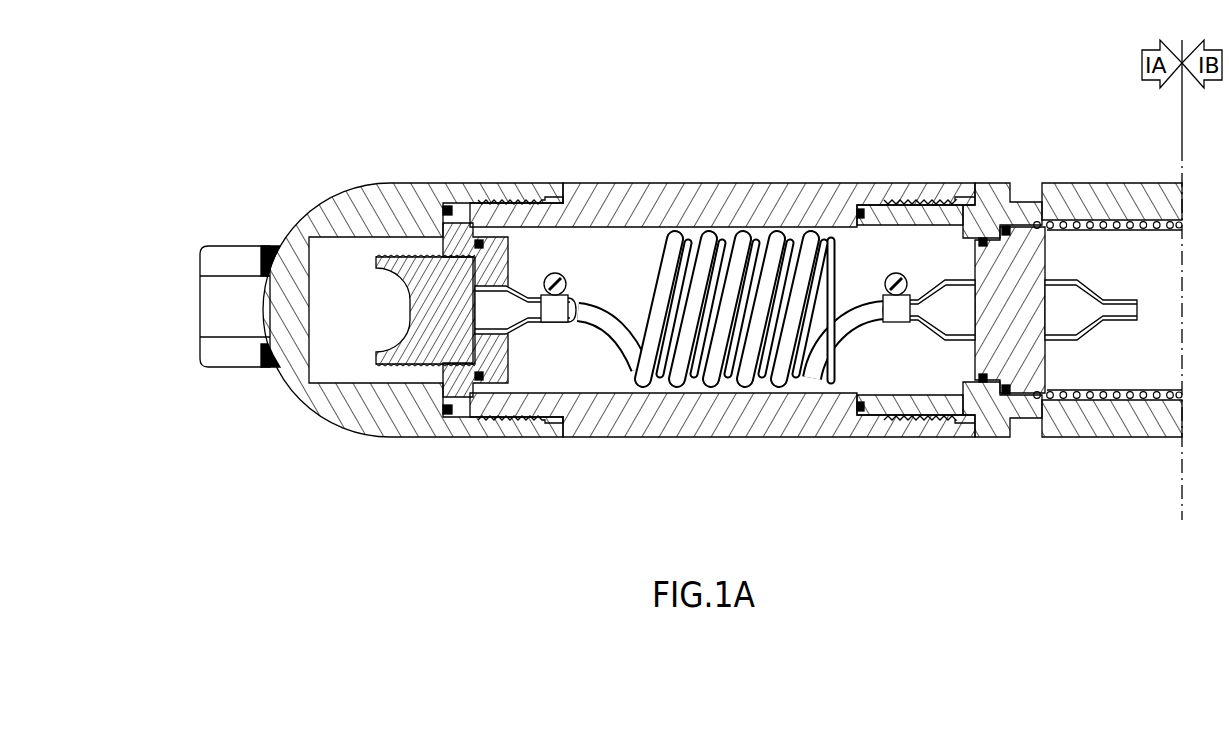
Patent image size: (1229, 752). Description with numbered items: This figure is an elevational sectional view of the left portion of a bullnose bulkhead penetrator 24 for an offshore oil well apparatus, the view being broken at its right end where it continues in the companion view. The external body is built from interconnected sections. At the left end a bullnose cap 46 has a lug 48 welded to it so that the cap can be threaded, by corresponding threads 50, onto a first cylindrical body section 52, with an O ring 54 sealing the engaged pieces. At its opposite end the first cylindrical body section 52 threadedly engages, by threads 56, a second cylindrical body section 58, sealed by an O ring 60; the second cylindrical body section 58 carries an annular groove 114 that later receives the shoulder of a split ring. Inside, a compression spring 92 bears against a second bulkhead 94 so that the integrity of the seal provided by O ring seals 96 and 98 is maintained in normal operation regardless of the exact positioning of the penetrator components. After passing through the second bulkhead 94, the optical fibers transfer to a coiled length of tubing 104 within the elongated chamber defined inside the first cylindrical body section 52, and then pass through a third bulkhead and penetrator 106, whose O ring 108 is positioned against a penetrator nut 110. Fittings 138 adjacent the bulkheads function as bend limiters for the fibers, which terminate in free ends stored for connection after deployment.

The bullnose bulkhead penetrator 24 is at (800, 138).
The bullnose cap 46 is at (393, 191).
The lug 48 is at (250, 316).
The threads 50 is at (522, 197).
The first cylindrical body section 52 is at (668, 190).
The O ring 54 is at (444, 207).
The threads 56 is at (926, 195).
The second cylindrical body section 58 is at (1118, 187).
The O ring 60 is at (857, 208).
The compression spring 92 is at (1066, 231).
The second bulkhead 94 is at (975, 349).
The O ring seal 96 is at (979, 242).
The O ring seal 98 is at (1004, 225).
The coiled length of tubing 104 is at (664, 246).
The third bulkhead and penetrator 106 is at (408, 266).
The O ring 108 is at (483, 244).
The penetrator nut 110 is at (456, 205).
The annular groove 114 is at (1015, 193).
The fittings 138 is at (568, 297).